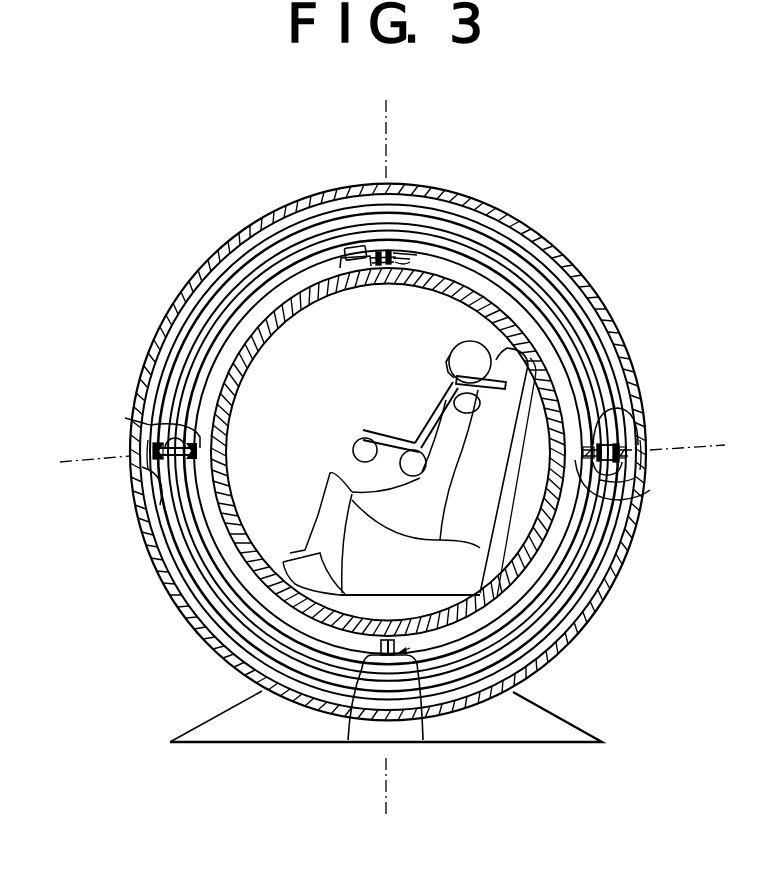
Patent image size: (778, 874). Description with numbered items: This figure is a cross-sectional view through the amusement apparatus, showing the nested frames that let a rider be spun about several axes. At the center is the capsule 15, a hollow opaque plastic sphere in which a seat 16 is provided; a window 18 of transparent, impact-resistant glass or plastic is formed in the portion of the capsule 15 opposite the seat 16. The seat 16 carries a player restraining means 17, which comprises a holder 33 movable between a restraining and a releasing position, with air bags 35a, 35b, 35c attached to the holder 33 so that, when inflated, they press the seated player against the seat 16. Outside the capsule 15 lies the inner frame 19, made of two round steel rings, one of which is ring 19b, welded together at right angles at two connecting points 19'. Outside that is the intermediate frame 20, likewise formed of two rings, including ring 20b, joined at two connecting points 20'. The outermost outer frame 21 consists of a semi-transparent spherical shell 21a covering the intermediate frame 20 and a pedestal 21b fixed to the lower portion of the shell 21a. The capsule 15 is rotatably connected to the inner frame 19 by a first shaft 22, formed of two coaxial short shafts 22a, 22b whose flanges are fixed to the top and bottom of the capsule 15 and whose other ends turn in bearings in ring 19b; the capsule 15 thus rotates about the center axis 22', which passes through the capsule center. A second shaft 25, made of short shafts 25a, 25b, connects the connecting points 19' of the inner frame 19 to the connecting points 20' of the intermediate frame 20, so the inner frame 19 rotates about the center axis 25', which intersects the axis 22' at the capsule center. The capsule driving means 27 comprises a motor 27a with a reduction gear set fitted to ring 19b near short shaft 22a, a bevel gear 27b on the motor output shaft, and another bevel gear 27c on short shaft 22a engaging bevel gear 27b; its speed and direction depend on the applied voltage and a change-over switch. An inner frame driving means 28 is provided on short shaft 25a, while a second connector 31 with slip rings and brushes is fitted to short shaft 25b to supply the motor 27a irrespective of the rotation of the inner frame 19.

The capsule 15 is at (237, 598).
The seat 16 is at (480, 530).
The player restraining means 17 is at (415, 425).
The window 18 is at (250, 357).
The inner frame 19 is at (405, 452).
The ring 19b is at (220, 333).
The connecting points 19' is at (388, 435).
The intermediate frame 20 is at (410, 452).
The ring 20b is at (237, 266).
The connecting points 20' is at (393, 459).
The outer frame 21 is at (526, 216).
The spherical shell 21a is at (221, 654).
The pedestal 21b is at (493, 730).
The first shaft 22 is at (394, 719).
The short shaft 22a is at (408, 262).
The short shaft 22b is at (348, 740).
The center axis 22' is at (375, 471).
The second shaft 25 is at (216, 478).
The short shaft 25a is at (160, 505).
The short shaft 25b is at (626, 412).
The center axis 25' is at (397, 450).
The capsule driving means 27 is at (350, 242).
The motor 27a is at (350, 288).
The bevel gear 27b is at (380, 268).
The bevel gear 27c is at (400, 248).
The inner frame driving means 28 is at (153, 448).
The second connector 31 is at (640, 478).
The holder 33 is at (358, 437).
The air bag 35a is at (448, 348).
The air bag 35b is at (408, 440).
The air bag 35c is at (350, 452).